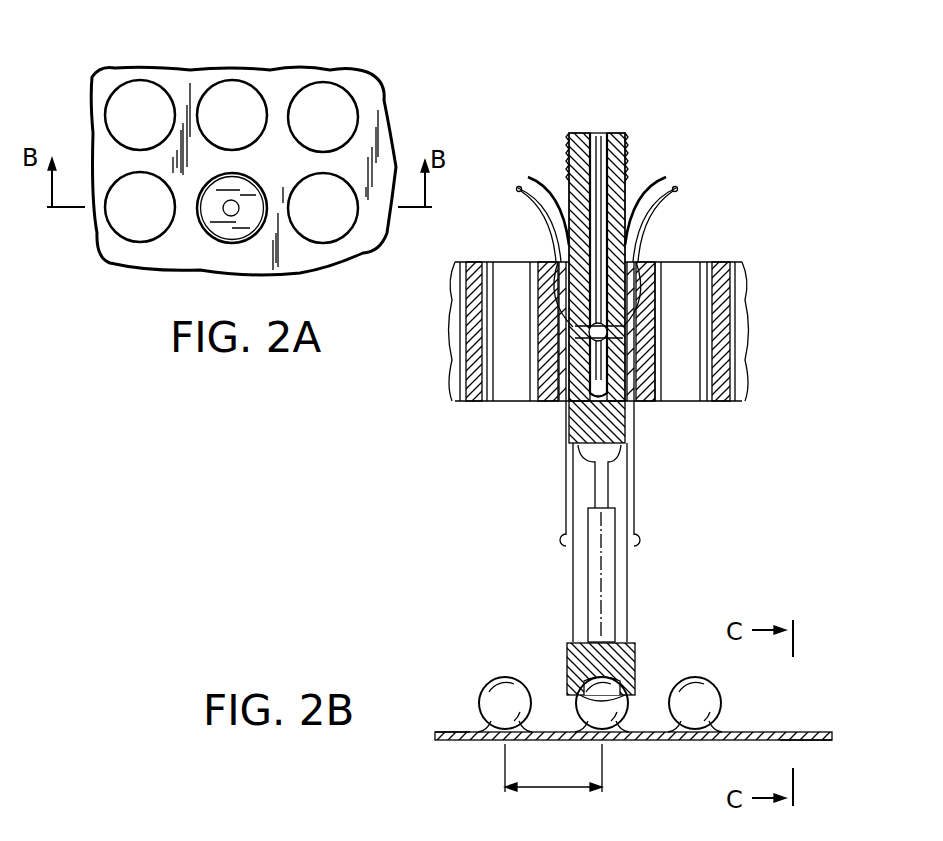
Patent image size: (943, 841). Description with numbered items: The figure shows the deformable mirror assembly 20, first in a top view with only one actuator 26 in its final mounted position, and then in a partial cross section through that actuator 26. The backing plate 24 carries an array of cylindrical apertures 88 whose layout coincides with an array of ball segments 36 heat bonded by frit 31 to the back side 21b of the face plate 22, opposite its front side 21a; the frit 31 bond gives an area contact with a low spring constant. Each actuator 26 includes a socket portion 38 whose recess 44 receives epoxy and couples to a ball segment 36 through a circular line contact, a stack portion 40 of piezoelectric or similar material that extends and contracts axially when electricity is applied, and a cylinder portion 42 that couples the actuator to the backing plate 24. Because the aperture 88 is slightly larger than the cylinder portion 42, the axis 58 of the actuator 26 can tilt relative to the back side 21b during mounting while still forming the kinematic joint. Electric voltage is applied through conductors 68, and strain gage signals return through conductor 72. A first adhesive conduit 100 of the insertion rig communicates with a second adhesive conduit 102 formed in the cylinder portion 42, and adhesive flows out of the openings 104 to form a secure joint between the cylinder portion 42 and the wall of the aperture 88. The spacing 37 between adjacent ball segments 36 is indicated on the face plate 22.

In FIG. 2B, the mirror assembly 20 is at (505, 493).
In FIG. 2B, the front side of face plate 21a is at (786, 745).
In FIG. 2B, the back side of face plate 21b is at (448, 728).
In FIG. 2B, the face plate 22 is at (807, 730).
In FIG. 2A, the backing plate 24 is at (365, 250).
In FIG. 2B, the backing plate 24 is at (722, 262).
In FIG. 2A, the actuator 26 is at (232, 238).
In FIG. 2B, the actuator 26 is at (648, 524).
In FIG. 2B, the frit 31 is at (577, 727).
In FIG. 2B, the ball segment 36 is at (481, 695).
In FIG. 2B, the ball pitch 37 is at (553, 790).
In FIG. 2B, the socket portion 38 is at (637, 643).
In FIG. 2B, the stack portion 40 is at (592, 563).
In FIG. 2B, the cylinder portion 42 is at (615, 253).
In FIG. 2B, the recess of socket portion 44 is at (572, 680).
In FIG. 2B, the axis of actuator 58 is at (601, 577).
In FIG. 2B, the conductors 68 is at (538, 203).
In FIG. 2B, the conductor 72 is at (531, 175).
In FIG. 2A, the cylindrical aperture 88 is at (133, 84).
In FIG. 2B, the cylindrical aperture 88 is at (512, 392).
In FIG. 2A, the first adhesive conduit 100 is at (242, 214).
In FIG. 2B, the first adhesive conduit 100 is at (598, 140).
In FIG. 2B, the second adhesive conduit 102 is at (580, 268).
In FIG. 2B, the openings 104 is at (555, 393).